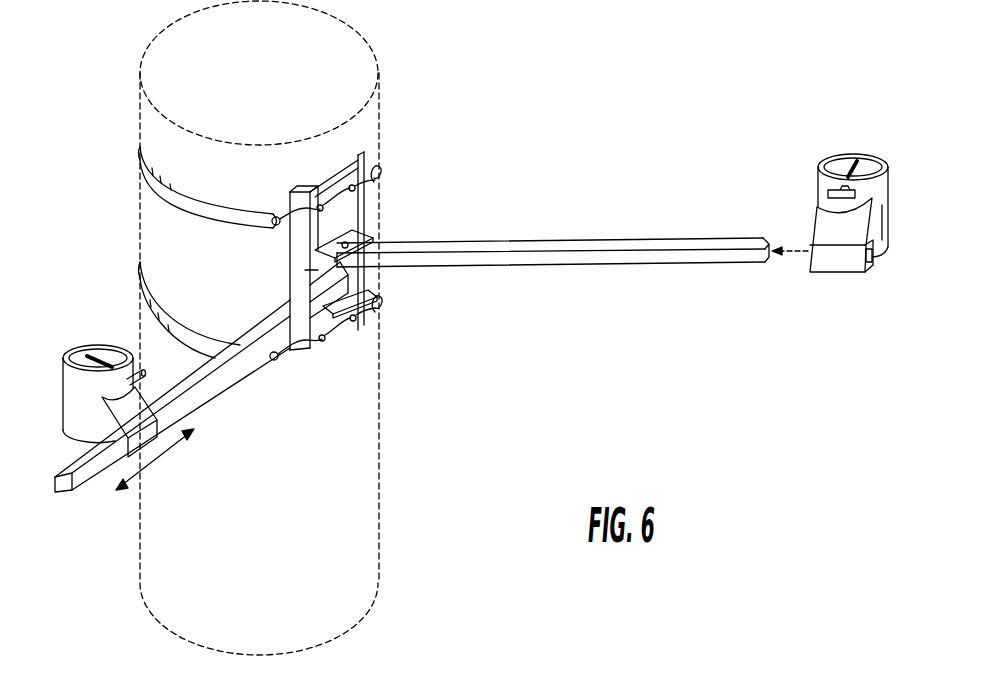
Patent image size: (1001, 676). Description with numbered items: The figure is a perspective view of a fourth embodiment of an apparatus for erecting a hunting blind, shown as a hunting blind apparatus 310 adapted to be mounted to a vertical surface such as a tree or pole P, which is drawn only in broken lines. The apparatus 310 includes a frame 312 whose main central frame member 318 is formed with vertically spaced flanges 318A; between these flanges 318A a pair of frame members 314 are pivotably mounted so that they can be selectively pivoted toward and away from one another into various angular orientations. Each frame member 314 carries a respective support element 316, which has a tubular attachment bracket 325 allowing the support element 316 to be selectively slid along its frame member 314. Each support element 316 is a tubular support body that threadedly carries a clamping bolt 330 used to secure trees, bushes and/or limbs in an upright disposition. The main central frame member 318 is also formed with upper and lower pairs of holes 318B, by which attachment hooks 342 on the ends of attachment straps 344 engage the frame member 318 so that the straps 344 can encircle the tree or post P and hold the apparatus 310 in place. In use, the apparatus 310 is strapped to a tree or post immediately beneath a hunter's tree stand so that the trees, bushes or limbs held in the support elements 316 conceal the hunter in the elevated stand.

The pole P is at (379, 513).
The hunting blind apparatus 310 is at (333, 366).
The frame 312 is at (284, 255).
The frame member 314 is at (523, 260).
The support element 316 is at (63, 428).
The main central frame member 318 is at (300, 272).
The flange 318A is at (372, 238).
The hole 318B is at (345, 185).
The tubular attachment bracket 325 is at (143, 438).
The clamping bolt 330 is at (98, 358).
The attachment hook 342 is at (277, 213).
The attachment strap 344 is at (158, 197).